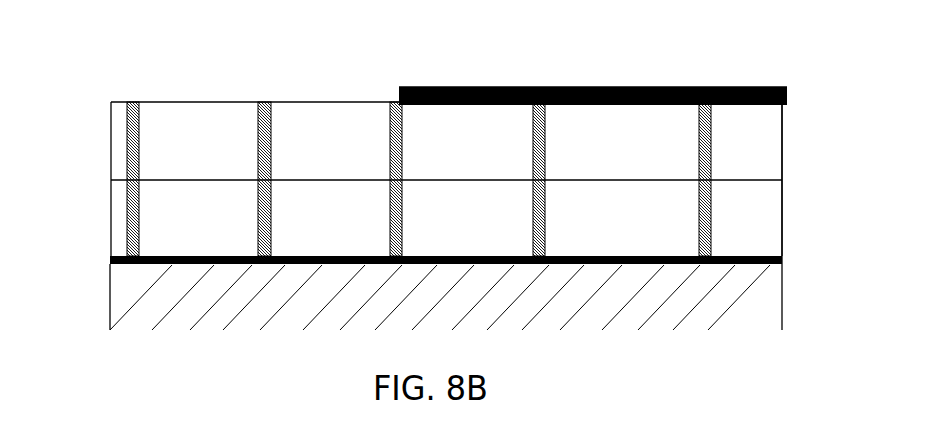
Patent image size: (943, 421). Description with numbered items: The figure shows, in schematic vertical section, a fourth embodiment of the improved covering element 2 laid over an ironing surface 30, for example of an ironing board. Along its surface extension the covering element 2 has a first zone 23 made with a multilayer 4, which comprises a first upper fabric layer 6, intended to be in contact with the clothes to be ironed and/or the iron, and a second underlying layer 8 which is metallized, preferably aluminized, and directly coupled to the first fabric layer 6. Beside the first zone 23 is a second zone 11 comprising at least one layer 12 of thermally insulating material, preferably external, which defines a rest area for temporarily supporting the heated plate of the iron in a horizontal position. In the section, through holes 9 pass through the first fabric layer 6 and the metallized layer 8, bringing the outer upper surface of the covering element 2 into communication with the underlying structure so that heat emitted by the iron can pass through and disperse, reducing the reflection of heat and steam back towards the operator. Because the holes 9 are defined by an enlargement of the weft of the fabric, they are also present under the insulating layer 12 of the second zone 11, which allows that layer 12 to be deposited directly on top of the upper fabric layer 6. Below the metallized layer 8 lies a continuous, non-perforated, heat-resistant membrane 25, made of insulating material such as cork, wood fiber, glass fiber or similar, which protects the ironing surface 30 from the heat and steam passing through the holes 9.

The improved covering element 2 is at (758, 57).
The multilayer 4 is at (96, 169).
The first fabric layer 6 is at (780, 135).
The second metallized layer 8 is at (776, 214).
The through holes 9 is at (263, 115).
The second zone 11 is at (582, 79).
The layer of thermally insulating material 12 is at (632, 87).
The first zone 23 is at (324, 90).
The continuous membrane 25 is at (779, 259).
The ironing surface 30 is at (745, 322).